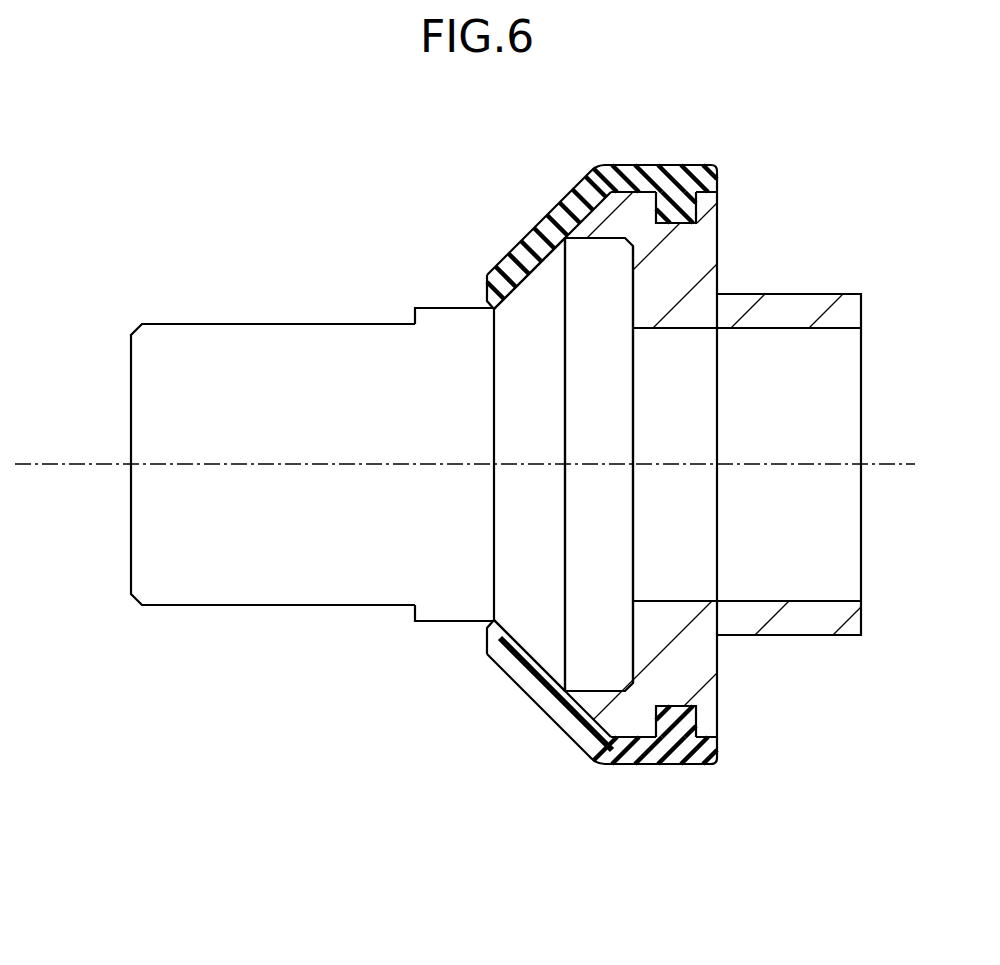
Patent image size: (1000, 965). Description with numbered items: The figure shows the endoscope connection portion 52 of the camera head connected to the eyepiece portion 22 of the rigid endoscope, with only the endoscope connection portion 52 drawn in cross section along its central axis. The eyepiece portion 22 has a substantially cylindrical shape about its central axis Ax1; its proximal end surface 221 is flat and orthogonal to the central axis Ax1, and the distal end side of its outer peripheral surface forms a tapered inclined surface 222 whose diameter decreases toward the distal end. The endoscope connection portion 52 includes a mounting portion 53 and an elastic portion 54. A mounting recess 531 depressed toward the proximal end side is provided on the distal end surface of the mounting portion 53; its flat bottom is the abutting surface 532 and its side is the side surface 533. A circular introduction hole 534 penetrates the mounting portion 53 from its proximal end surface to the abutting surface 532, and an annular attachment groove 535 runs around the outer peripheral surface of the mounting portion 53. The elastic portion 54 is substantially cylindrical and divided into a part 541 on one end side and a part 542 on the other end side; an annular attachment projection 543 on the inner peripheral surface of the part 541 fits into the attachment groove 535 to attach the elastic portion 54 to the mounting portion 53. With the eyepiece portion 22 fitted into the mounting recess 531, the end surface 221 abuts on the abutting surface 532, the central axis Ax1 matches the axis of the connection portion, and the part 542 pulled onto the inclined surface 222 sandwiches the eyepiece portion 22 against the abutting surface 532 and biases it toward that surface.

The central axis Ax1 is at (55, 463).
The eyepiece portion 22 is at (215, 590).
The inclined surface 222 is at (530, 308).
The end surface 221 is at (635, 273).
The endoscope connection portion 52 is at (785, 877).
The mounting portion 53 is at (693, 536).
The mounting recess 531 is at (469, 475).
The abutting surface 532 is at (633, 627).
The side surface 533 is at (585, 677).
The introduction hole 534 is at (767, 329).
The attachment groove 535 is at (593, 723).
The elastic portion 54 is at (660, 475).
The part on one end side 541 is at (652, 173).
The part on the other end side 542 is at (547, 228).
The attachment projection 543 is at (687, 210).